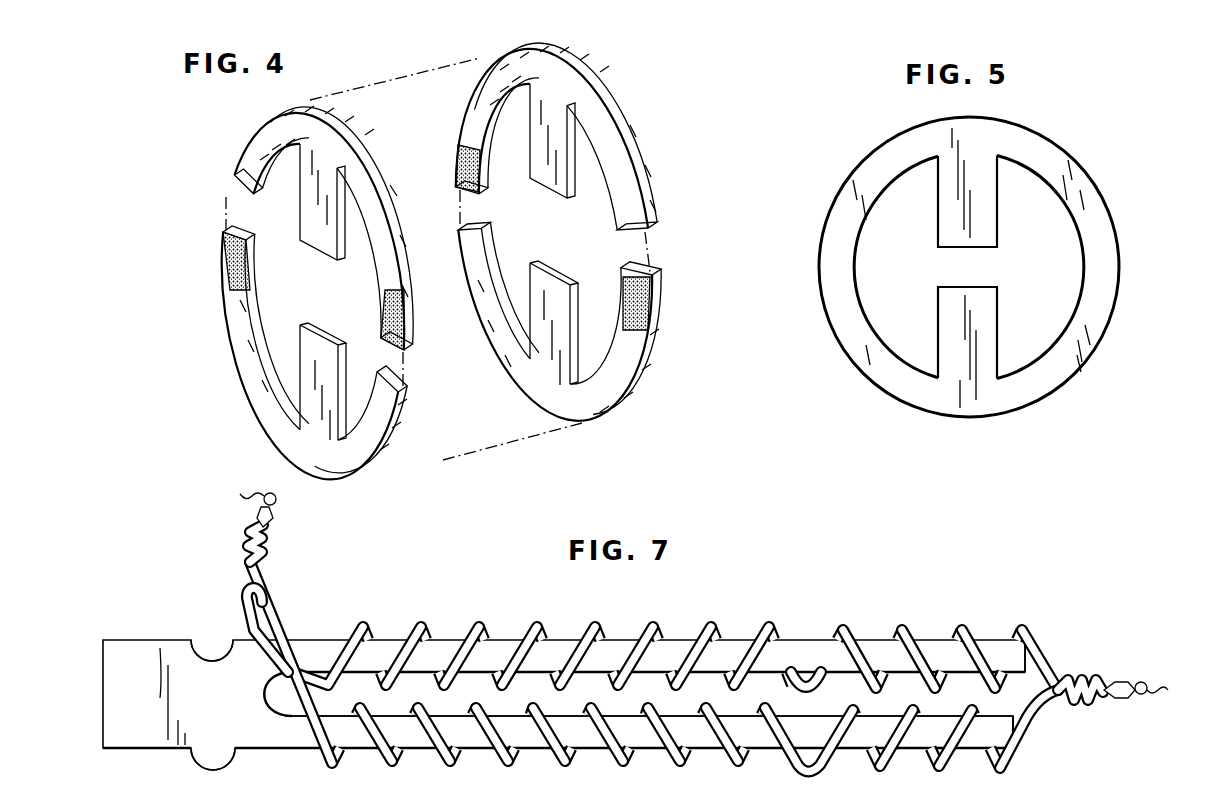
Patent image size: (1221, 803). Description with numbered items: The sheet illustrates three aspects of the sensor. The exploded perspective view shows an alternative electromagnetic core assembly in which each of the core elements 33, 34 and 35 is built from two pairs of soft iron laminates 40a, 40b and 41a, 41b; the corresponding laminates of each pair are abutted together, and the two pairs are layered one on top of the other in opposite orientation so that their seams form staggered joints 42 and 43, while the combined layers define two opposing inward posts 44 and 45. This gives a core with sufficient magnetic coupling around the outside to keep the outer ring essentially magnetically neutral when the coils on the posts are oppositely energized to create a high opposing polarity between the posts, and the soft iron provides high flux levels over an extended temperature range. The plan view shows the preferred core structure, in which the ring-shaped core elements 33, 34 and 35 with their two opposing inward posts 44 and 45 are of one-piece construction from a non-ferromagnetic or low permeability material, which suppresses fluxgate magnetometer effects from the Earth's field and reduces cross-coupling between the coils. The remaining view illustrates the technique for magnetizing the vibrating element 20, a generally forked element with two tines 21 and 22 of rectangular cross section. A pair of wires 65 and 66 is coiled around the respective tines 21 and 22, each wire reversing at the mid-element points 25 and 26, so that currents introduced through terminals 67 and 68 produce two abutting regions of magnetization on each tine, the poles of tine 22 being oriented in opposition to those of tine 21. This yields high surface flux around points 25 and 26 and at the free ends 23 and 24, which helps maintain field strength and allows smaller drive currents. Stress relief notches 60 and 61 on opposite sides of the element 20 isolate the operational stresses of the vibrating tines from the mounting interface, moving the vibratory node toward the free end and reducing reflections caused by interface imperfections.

In FIG. 4, the soft iron laminate 40a is at (248, 150).
In FIG. 4, the soft iron laminate 40b is at (228, 284).
In FIG. 5, the soft iron laminate 40b is at (869, 366).
In FIG. 4, the soft iron laminate 41a is at (636, 162).
In FIG. 4, the soft iron laminate 41b is at (654, 350).
In FIG. 4, the staggered joint 42 is at (230, 247).
In FIG. 4, the staggered joint 43 is at (393, 318).
In FIG. 4, the inward post 44 is at (305, 240).
In FIG. 5, the inward post 44 is at (948, 220).
In FIG. 4, the inward post 45 is at (312, 345).
In FIG. 5, the inward post 45 is at (950, 306).
In FIG. 5, the core element 33 is at (978, 287).
In FIG. 5, the core element 34 is at (978, 287).
In FIG. 5, the core element 35 is at (1062, 390).
In FIG. 7, the vibrating element 20 is at (452, 634).
In FIG. 7, the tine 21 is at (668, 640).
In FIG. 7, the tine 22 is at (742, 715).
In FIG. 7, the free end 23 is at (1023, 660).
In FIG. 7, the free end 24 is at (1023, 748).
In FIG. 7, the mid-element point 25 is at (806, 645).
In FIG. 7, the mid-element point 26 is at (816, 715).
In FIG. 7, the stress relief notch 60 is at (210, 728).
In FIG. 7, the stress relief notch 61 is at (207, 652).
In FIG. 7, the wire 65 is at (285, 608).
In FIG. 7, the wire 66 is at (243, 592).
In FIG. 7, the terminal 67 is at (244, 521).
In FIG. 7, the terminal 68 is at (1128, 691).